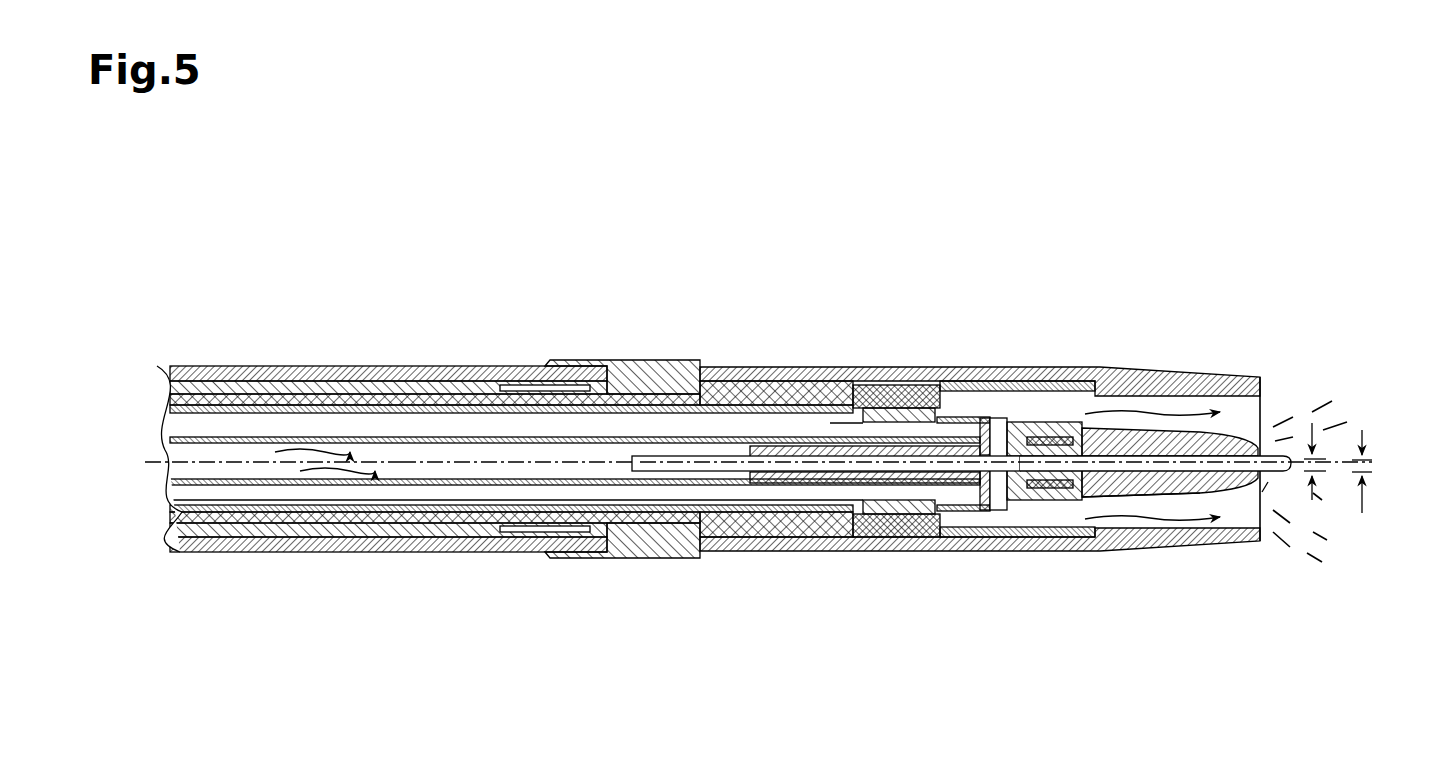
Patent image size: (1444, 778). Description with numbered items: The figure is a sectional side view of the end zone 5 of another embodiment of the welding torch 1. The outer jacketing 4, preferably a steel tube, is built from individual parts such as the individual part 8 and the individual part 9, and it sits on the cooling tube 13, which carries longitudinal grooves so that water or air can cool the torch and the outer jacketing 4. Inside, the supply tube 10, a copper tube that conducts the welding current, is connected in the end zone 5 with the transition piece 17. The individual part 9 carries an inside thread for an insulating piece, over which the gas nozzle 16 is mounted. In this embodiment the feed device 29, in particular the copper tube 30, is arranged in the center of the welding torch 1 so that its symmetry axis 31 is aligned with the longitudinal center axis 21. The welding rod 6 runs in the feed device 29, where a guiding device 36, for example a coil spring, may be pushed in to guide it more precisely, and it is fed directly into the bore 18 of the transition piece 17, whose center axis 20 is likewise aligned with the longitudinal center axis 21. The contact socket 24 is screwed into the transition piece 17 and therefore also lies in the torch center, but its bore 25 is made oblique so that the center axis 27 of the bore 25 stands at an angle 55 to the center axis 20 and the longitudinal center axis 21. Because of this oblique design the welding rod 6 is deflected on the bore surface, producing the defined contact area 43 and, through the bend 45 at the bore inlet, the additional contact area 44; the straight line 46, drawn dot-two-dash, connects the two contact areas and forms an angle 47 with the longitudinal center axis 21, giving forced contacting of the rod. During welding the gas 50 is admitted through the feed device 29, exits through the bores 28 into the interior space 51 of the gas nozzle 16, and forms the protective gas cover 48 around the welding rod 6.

The welding torch 1 is at (1125, 125).
The outer jacketing 4 is at (203, 290).
The end zone 5 is at (1222, 232).
The welding rod 6 is at (653, 465).
The individual part 8 is at (343, 368).
The individual part 9 is at (643, 362).
The supply tube 10 is at (292, 368).
The cooling tube 13 is at (457, 368).
The gas nozzle 16 is at (1051, 368).
The transition piece 17 is at (1047, 507).
The bore 18 is at (995, 430).
The center axis 20 is at (918, 466).
The longitudinal center axis 21 is at (213, 465).
The contact socket 24 is at (1145, 492).
The bore 25 is at (1188, 437).
The center axis 27 is at (1222, 458).
The bores 28 is at (995, 425).
The feed device 29 is at (435, 492).
The copper tube 30 is at (470, 483).
The symmetry axis 31 is at (537, 463).
The guiding device 36 is at (805, 474).
The contact area 43 is at (1268, 482).
The contact area 44 is at (1012, 420).
The bend 45 is at (1023, 455).
The straight line 46 is at (1180, 497).
The angle 47 is at (1362, 510).
The protective gas cover 48 is at (1282, 400).
The gas 50 is at (318, 480).
The interior space 51 is at (1152, 400).
The angle 55 is at (1313, 498).